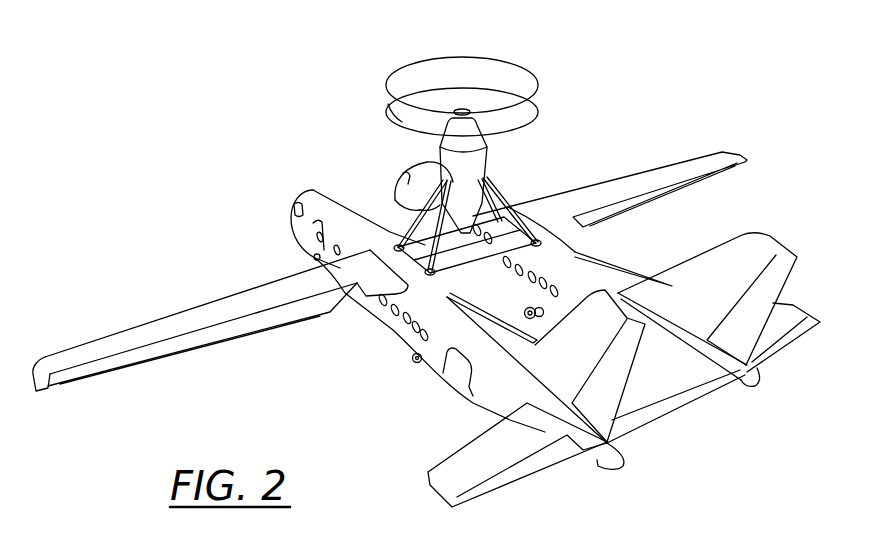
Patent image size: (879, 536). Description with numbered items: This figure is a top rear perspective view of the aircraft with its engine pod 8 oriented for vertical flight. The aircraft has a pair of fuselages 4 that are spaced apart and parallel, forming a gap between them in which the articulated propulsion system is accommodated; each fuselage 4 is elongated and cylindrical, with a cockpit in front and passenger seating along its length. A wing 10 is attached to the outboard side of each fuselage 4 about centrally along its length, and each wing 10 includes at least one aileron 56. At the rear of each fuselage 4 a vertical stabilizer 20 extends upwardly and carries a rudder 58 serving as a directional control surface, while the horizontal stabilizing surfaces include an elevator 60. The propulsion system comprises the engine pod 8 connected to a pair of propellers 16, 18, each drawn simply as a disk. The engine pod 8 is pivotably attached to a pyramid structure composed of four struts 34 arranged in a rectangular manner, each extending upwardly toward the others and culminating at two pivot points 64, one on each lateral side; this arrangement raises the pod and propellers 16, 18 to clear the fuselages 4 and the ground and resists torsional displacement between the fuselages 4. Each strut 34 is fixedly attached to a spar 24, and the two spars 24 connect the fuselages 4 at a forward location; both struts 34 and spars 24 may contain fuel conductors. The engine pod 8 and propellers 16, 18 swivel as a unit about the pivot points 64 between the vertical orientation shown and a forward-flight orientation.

The fuselage 4 is at (420, 163).
The engine pod 8 is at (488, 151).
The wing 10 is at (189, 306).
The propeller 16 is at (389, 100).
The propeller 18 is at (470, 60).
The vertical stabilizer 20 is at (642, 274).
The spar 24 is at (479, 268).
The strut 34 is at (498, 188).
The aileron 56 is at (258, 325).
The rudder 58 is at (628, 400).
The elevator 60 is at (512, 470).
The pivot point 64 is at (418, 192).